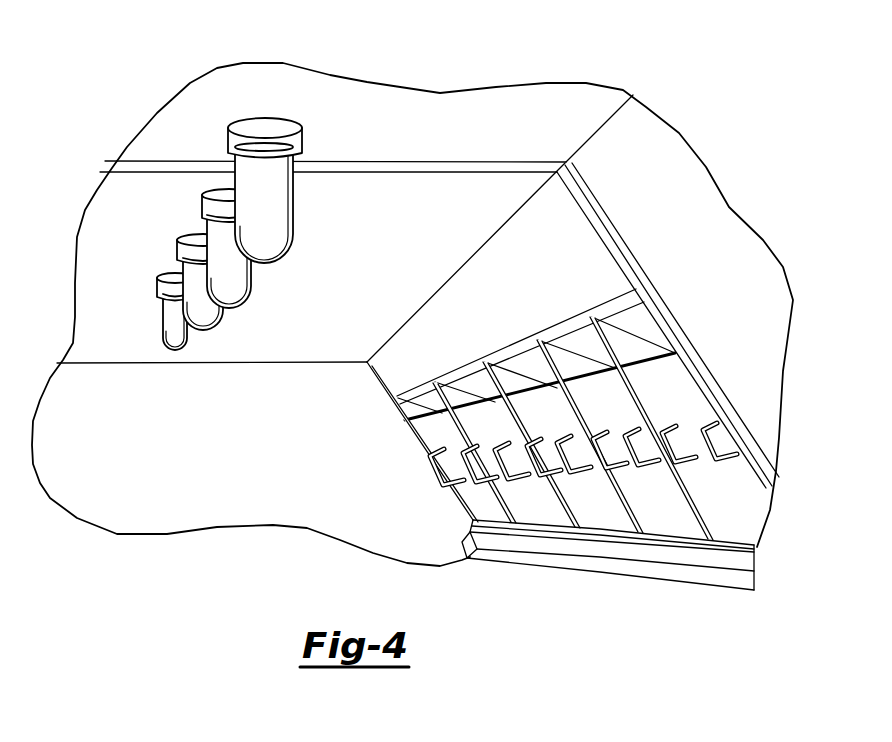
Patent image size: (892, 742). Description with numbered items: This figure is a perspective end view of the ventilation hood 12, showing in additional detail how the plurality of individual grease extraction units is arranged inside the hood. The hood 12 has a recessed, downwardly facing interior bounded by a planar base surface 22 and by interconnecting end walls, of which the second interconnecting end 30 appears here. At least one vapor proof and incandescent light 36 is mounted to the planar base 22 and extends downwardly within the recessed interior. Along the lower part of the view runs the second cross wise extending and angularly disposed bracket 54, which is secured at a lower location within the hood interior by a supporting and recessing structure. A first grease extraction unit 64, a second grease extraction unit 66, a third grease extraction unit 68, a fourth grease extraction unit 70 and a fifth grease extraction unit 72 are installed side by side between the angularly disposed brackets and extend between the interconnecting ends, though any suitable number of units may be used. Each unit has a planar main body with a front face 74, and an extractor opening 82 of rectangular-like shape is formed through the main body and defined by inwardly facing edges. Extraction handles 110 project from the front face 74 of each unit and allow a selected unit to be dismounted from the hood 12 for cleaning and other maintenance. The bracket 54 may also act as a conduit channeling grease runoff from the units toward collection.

The ventilation hood 12 is at (414, 70).
The planar base surface 22 is at (414, 238).
The second interconnecting end 30 is at (272, 488).
The vapor proof and incandescent light 36 is at (240, 290).
The second cross wise extending and angularly disposed bracket 54 is at (478, 535).
The first grease extraction unit 64 is at (480, 502).
The second grease extraction unit 66 is at (539, 504).
The third grease extraction unit 68 is at (603, 504).
The fourth grease extraction unit 70 is at (683, 521).
The fifth grease extraction unit 72 is at (746, 512).
The front face 74 is at (550, 426).
The extractor opening 82 is at (402, 415).
The extraction handles 110 is at (460, 483).